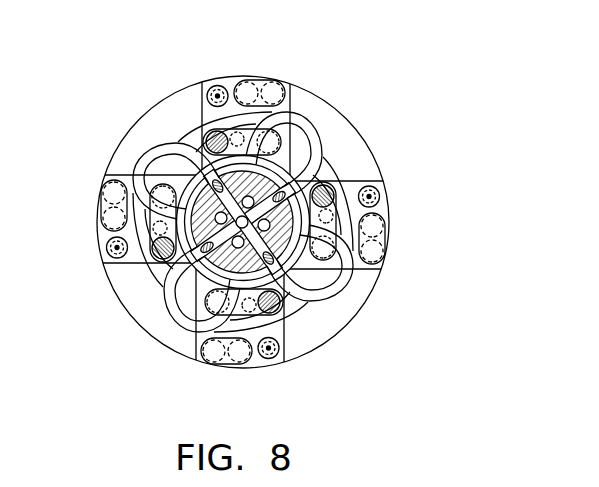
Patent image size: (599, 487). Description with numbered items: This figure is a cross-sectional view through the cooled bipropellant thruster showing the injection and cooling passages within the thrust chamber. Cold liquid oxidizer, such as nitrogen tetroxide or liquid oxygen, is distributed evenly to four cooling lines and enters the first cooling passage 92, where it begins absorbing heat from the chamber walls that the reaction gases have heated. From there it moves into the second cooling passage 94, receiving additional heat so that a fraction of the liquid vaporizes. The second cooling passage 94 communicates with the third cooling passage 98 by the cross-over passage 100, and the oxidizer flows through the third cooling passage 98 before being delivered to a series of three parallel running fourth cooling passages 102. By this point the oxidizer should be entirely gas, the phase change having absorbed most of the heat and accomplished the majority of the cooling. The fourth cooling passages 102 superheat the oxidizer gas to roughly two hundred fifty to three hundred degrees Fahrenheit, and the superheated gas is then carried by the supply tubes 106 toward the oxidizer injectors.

The first cooling passage 92 is at (214, 86).
The second cooling passage 94 is at (293, 82).
The third cooling passage 98 is at (246, 80).
The cross-over passage 100 is at (274, 80).
The fourth cooling passages 102 is at (206, 138).
The supply tubes 106 is at (318, 125).